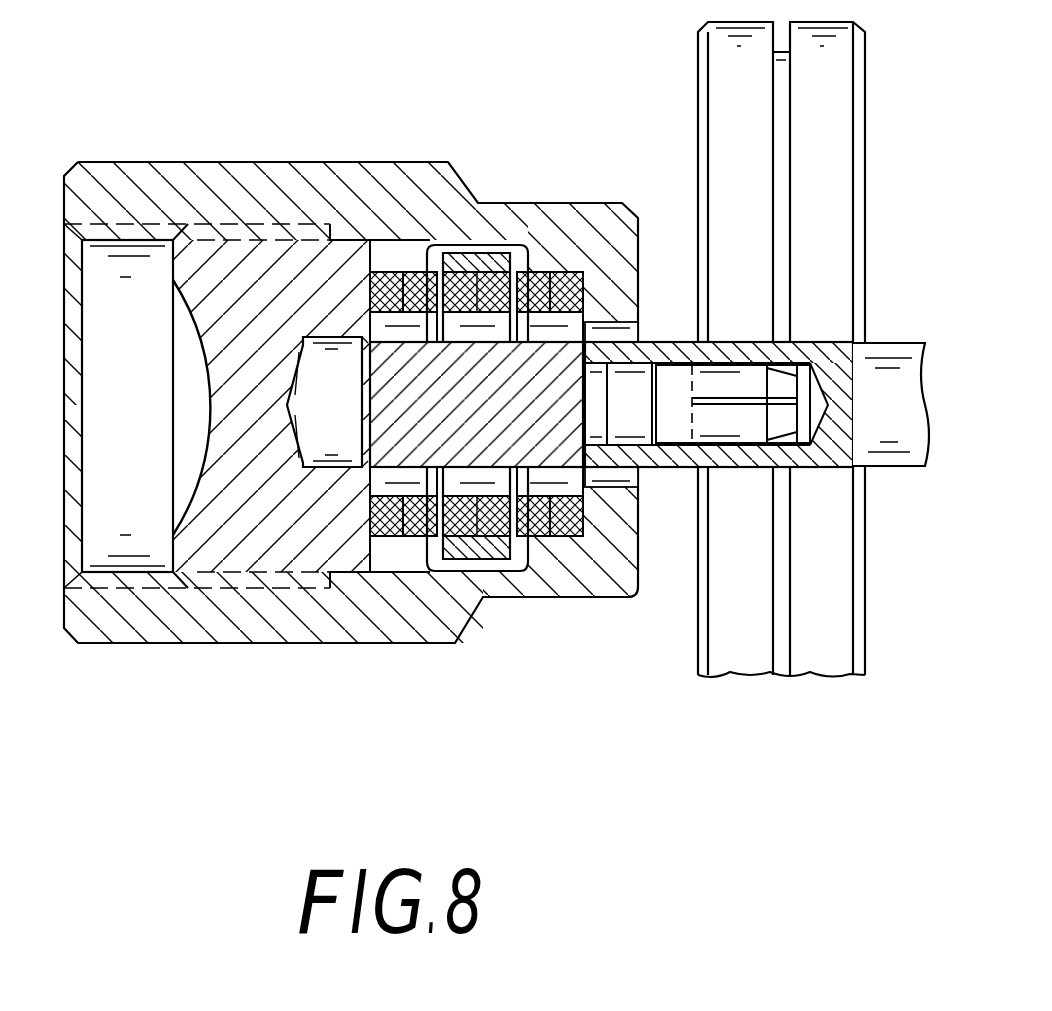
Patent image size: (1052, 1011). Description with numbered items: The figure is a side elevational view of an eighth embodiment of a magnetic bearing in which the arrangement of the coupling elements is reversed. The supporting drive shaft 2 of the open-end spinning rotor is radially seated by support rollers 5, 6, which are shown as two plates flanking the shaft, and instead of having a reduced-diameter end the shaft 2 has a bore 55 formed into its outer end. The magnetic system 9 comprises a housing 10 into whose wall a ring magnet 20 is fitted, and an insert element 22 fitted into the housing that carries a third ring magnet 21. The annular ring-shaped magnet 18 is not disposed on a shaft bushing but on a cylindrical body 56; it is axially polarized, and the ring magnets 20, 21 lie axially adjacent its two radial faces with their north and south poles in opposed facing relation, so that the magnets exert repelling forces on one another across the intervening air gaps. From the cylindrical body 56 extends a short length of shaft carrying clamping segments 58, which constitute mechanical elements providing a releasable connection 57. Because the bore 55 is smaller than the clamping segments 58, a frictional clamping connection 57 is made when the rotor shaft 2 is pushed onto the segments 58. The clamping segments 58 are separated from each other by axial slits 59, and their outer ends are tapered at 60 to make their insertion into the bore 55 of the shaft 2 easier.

The magnetic system 9 is at (493, 100).
The housing 10 is at (160, 628).
The insert element 22 is at (256, 553).
The third ring magnet 21 is at (395, 522).
The annular ring-shaped magnet 18 is at (488, 517).
The ring magnet 20 is at (567, 540).
The cylindrical body 56 is at (638, 502).
The releasable connection 57 is at (682, 322).
The clamping segments 58 is at (733, 372).
The axial slits 59 is at (743, 400).
The tapered outer ends 60 is at (782, 422).
The bore 55 is at (813, 378).
The drive shaft 2 is at (904, 440).
The support roller 5 is at (762, 653).
The support roller 6 is at (781, 349).